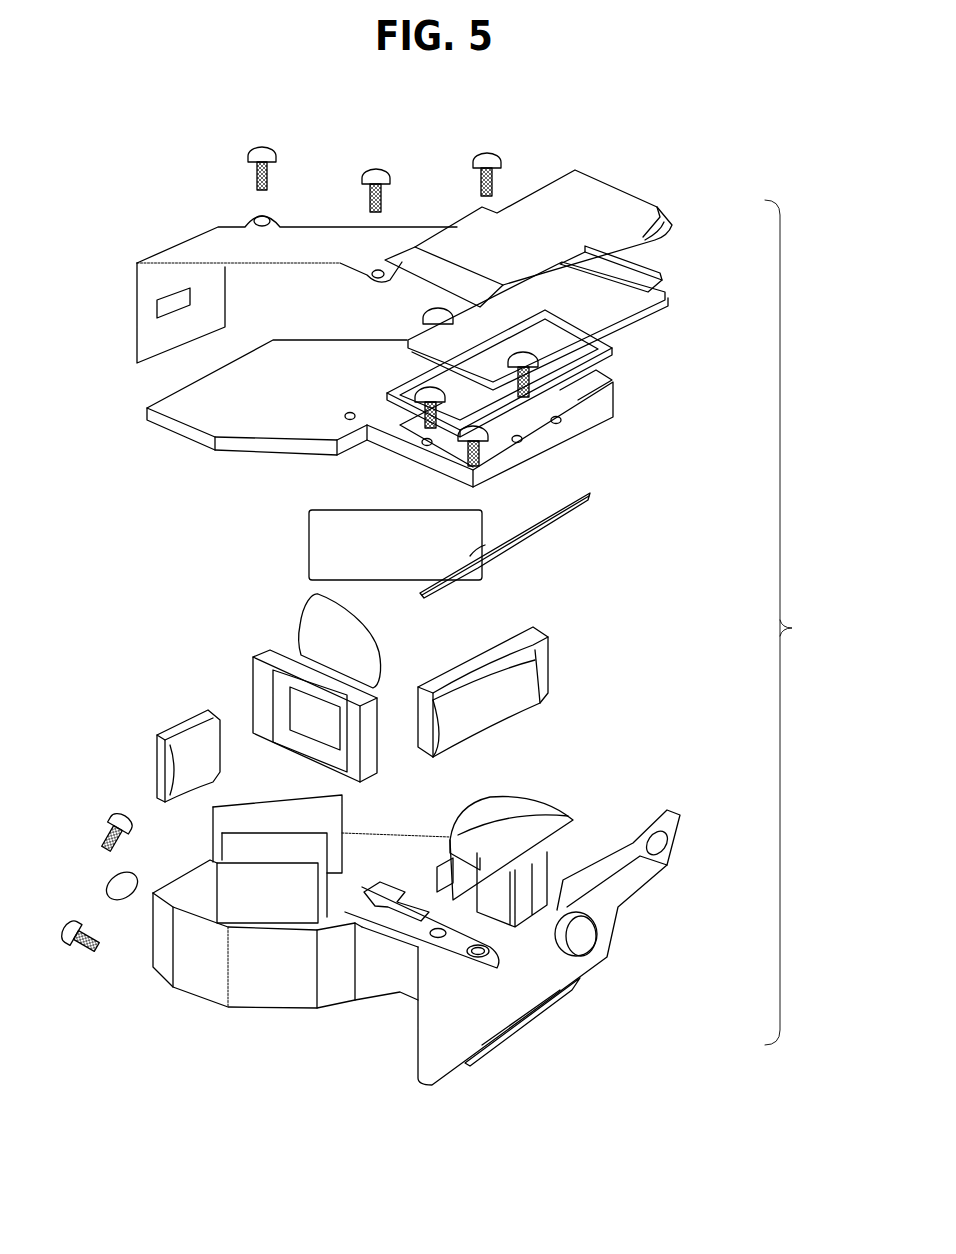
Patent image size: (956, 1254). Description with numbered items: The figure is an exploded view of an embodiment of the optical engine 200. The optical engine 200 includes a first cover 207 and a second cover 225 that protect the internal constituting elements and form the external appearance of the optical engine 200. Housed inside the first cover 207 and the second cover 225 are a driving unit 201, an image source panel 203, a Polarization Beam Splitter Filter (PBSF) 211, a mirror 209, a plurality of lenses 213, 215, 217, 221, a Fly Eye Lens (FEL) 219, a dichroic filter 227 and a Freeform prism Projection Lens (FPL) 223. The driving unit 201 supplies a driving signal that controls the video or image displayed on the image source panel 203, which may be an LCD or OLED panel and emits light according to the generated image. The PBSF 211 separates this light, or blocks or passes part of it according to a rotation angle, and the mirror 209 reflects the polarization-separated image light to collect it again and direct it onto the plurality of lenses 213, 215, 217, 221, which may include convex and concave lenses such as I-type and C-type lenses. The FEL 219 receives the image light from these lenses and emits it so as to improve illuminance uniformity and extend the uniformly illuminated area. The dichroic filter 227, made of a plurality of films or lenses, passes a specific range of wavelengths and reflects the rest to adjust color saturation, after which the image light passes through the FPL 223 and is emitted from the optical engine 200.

The optical engine 200 is at (800, 622).
The driving unit 201 is at (668, 222).
The image source panel 203 is at (632, 326).
The first cover 207 is at (148, 343).
The mirror 209 is at (318, 543).
The Polarization Beam Splitter Filter (PBSF) 211 is at (560, 523).
The lens 213 is at (310, 627).
The lens 215 is at (165, 760).
The lens 217 is at (545, 662).
The Fly Eye Lens (FEL) 219 is at (255, 689).
The lens 221 is at (108, 884).
The Freeform prism Projection Lens (FPL) 223 is at (537, 807).
The second cover 225 is at (662, 864).
The dichroic filter 227 is at (268, 912).